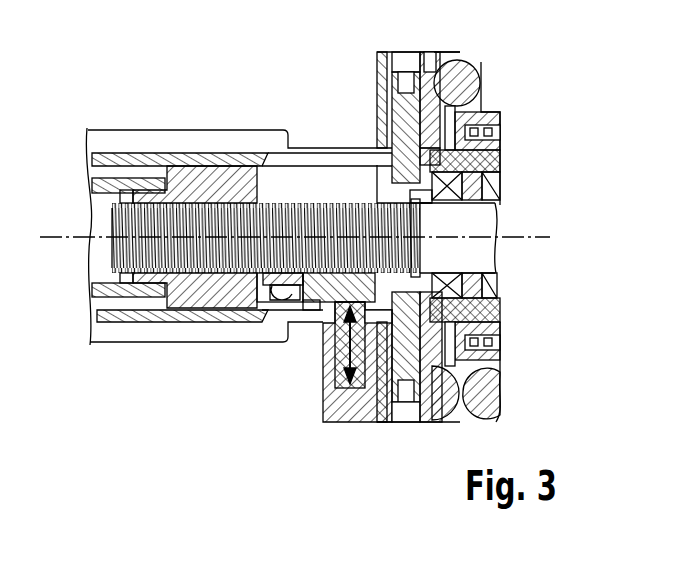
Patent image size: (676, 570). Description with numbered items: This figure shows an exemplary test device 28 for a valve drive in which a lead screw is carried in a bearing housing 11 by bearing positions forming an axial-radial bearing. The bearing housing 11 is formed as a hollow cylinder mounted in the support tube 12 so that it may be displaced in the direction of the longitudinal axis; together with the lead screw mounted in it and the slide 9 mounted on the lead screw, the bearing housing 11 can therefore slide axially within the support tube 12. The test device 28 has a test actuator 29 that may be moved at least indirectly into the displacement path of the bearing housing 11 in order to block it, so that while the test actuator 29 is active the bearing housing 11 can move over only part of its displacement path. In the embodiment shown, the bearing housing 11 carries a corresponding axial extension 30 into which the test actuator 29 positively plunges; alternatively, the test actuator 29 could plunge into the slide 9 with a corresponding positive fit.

The slide 9 is at (217, 290).
The bearing housing 11 is at (487, 167).
The support tube 12 is at (128, 320).
The test device 28 is at (324, 112).
The test actuator 29 is at (357, 422).
The extension 30 is at (318, 290).